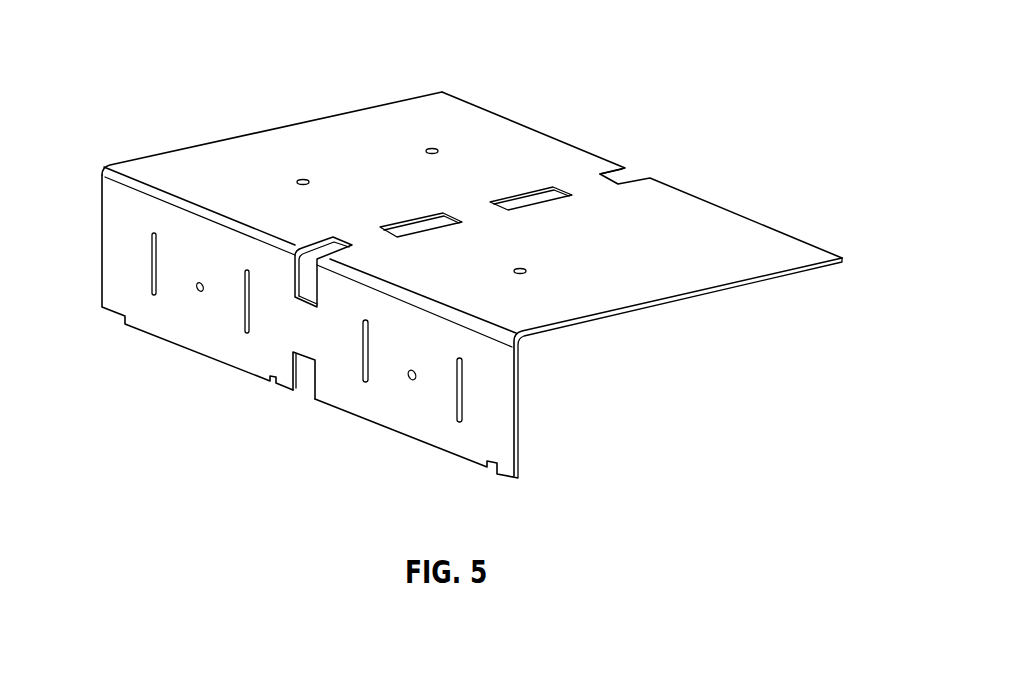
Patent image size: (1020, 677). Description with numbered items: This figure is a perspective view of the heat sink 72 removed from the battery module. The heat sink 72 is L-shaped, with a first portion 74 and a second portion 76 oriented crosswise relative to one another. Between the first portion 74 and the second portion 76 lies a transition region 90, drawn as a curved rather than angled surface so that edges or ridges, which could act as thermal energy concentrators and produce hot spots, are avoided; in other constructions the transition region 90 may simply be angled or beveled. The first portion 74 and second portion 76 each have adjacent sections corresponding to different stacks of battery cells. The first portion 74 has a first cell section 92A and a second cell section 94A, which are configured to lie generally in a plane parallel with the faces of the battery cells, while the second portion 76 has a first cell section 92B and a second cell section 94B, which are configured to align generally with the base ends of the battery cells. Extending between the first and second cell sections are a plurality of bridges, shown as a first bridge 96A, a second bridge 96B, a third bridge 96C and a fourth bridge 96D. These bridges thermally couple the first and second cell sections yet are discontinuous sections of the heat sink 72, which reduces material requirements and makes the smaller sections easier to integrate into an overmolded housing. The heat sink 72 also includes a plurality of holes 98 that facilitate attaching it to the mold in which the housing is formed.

The transition region 90 is at (103, 167).
The heat sink 72 is at (597, 66).
The first portion 74 is at (707, 171).
The second portion 76 is at (535, 450).
The first cell section 92A is at (442, 103).
The first cell section 92B is at (110, 258).
The second cell section 94A is at (782, 245).
The second cell section 94B is at (503, 405).
The first bridge 96A is at (600, 178).
The second bridge 96B is at (483, 212).
The third bridge 96C is at (355, 237).
The fourth bridge 96D is at (310, 338).
The holes 98 is at (520, 268).